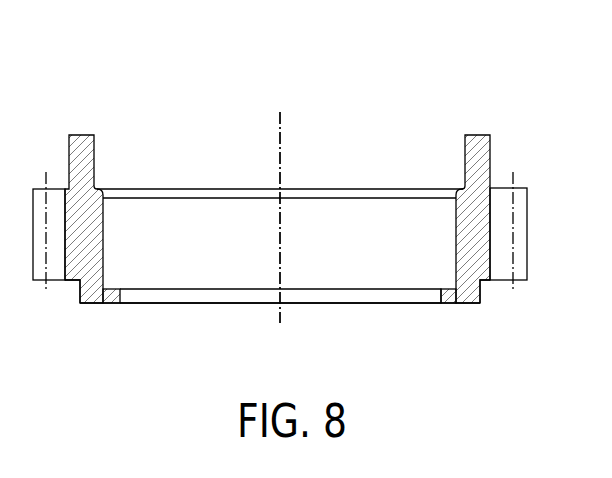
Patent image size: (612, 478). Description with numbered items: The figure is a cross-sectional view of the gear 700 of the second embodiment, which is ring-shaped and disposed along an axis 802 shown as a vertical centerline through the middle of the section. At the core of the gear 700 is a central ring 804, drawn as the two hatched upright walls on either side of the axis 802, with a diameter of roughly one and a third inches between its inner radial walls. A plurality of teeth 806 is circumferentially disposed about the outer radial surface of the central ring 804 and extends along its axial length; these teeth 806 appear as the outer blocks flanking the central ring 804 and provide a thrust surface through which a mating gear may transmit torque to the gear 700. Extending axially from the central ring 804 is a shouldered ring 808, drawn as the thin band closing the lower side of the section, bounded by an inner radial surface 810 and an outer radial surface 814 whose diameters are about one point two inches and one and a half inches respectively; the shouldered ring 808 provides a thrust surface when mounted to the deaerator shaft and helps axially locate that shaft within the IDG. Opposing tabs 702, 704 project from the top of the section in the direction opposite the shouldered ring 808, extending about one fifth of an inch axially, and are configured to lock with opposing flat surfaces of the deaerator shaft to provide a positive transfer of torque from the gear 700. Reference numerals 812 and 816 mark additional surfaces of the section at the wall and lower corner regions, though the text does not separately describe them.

The gear 700 is at (346, 87).
The opposing tab 702 is at (80, 133).
The opposing tab 704 is at (478, 133).
The axis 802 is at (272, 124).
The central ring 804 is at (63, 282).
The plurality of teeth 806 is at (527, 206).
The shouldered ring 808 is at (470, 305).
The inner radial surface 810 is at (94, 156).
The second side wall portion 812 is at (465, 157).
The outer radial surface 814 is at (78, 293).
The second notch 816 is at (481, 288).